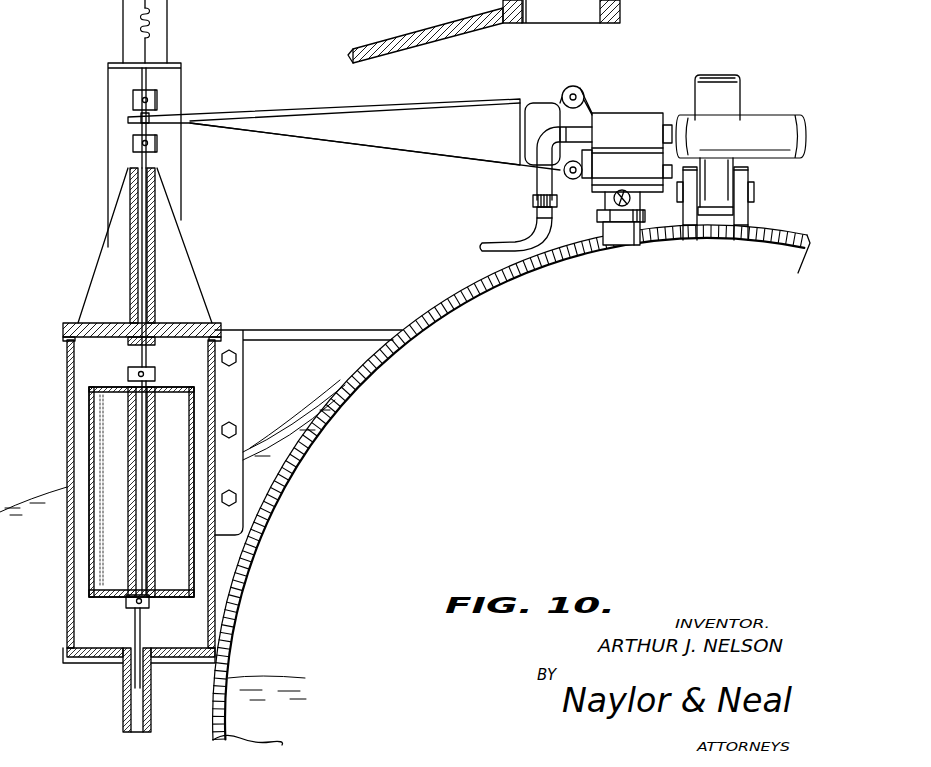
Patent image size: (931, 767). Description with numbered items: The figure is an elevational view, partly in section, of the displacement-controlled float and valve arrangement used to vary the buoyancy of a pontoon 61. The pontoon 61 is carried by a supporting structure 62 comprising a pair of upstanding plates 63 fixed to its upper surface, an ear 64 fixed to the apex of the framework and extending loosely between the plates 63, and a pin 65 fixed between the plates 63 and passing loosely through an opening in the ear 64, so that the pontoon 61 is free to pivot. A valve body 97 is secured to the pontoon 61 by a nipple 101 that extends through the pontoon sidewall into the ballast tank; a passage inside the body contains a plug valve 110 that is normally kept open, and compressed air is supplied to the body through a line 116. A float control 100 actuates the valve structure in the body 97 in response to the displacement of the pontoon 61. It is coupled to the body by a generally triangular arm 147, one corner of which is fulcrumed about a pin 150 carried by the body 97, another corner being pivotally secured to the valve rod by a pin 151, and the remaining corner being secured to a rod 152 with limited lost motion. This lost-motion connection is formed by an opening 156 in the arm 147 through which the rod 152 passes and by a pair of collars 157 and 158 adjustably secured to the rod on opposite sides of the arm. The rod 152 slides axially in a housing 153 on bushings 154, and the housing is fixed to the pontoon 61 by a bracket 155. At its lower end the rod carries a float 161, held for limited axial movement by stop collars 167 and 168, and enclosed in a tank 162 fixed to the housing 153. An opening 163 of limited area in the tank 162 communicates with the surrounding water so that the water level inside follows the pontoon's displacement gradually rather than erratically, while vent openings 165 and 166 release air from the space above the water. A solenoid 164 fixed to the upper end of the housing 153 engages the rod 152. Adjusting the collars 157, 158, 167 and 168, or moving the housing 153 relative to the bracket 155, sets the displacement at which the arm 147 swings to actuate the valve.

The float control 100 is at (72, 243).
The solenoid 164 is at (167, 33).
The rod 152 is at (150, 78).
The collar 158 is at (133, 99).
The opening 156 is at (150, 115).
The collar 157 is at (133, 143).
The arm 147 is at (408, 106).
The pin 150 is at (577, 95).
The vent opening 166 is at (133, 190).
The bushings 154 is at (150, 178).
The housing 153 is at (193, 246).
The vent opening 165 is at (125, 323).
The stop collar 168 is at (152, 372).
The float 161 is at (90, 405).
The stop collar 167 is at (150, 603).
The tank 162 is at (68, 560).
The opening 163 is at (90, 658).
The bracket 155 is at (278, 330).
The pontoon 61 is at (432, 312).
The line 116 is at (540, 183).
The pin 151 is at (571, 178).
The valve body 97 is at (634, 110).
The plug valve 110 is at (622, 190).
The nipple 101 is at (605, 228).
The supporting structure 62 is at (758, 208).
The ear 64 is at (725, 182).
The pin 65 is at (752, 195).
The plates 63 is at (683, 214).